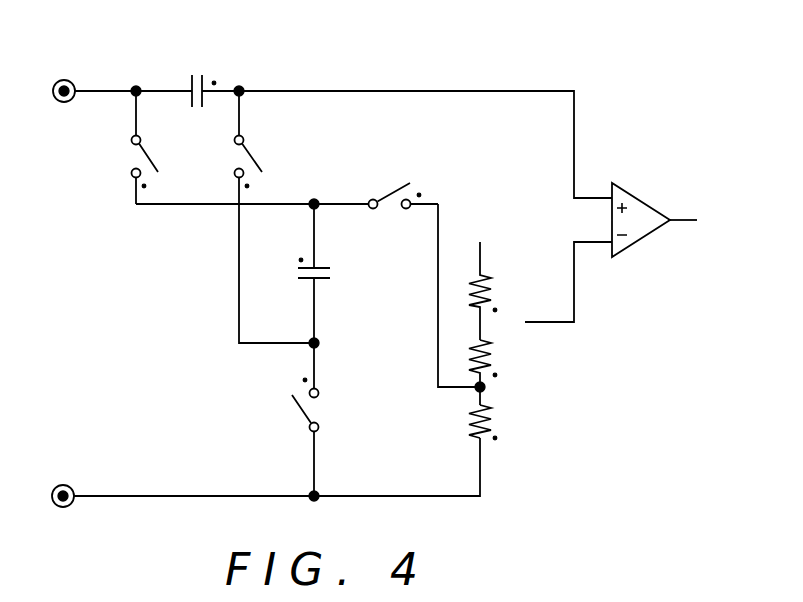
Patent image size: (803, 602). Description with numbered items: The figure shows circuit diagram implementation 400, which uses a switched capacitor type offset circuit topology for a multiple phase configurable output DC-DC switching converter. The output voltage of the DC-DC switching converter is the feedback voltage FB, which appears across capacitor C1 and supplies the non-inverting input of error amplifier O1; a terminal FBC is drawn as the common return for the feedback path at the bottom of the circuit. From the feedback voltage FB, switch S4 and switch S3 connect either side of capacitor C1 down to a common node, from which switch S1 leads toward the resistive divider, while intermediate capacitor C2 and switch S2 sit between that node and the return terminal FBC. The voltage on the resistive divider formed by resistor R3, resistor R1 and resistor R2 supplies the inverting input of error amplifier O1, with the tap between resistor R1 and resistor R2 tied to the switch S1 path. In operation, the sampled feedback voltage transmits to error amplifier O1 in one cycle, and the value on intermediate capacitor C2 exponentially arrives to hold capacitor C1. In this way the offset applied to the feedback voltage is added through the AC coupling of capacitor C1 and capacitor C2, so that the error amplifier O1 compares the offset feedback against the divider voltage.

The circuit diagram implementation 400 is at (130, 48).
The feedback voltage FB is at (63, 79).
The feedback common terminal FBC is at (63, 484).
The hold capacitor C1 is at (200, 79).
The intermediate capacitor C2 is at (327, 273).
The switch S1 is at (404, 190).
The switch S2 is at (321, 419).
The switch S3 is at (258, 150).
The switch S4 is at (155, 150).
The resistor R1 is at (496, 372).
The resistor R2 is at (496, 422).
The resistor R3 is at (496, 291).
The error amplifier O1 is at (654, 219).